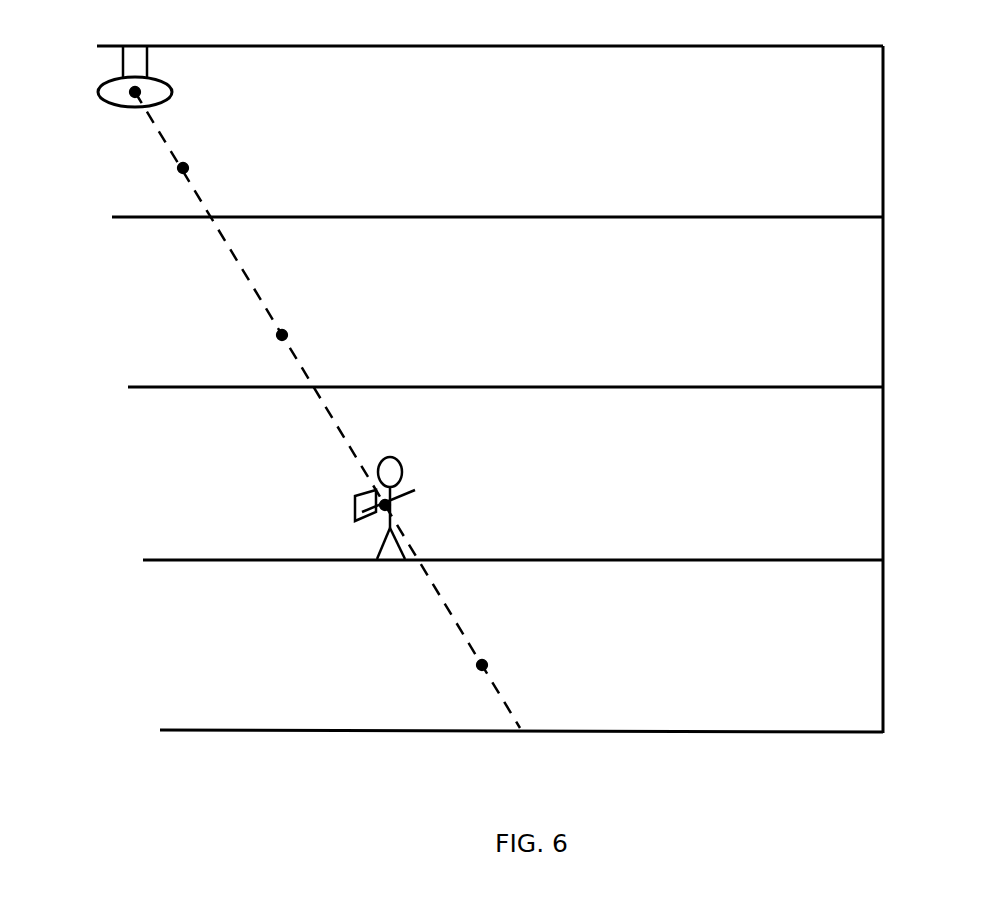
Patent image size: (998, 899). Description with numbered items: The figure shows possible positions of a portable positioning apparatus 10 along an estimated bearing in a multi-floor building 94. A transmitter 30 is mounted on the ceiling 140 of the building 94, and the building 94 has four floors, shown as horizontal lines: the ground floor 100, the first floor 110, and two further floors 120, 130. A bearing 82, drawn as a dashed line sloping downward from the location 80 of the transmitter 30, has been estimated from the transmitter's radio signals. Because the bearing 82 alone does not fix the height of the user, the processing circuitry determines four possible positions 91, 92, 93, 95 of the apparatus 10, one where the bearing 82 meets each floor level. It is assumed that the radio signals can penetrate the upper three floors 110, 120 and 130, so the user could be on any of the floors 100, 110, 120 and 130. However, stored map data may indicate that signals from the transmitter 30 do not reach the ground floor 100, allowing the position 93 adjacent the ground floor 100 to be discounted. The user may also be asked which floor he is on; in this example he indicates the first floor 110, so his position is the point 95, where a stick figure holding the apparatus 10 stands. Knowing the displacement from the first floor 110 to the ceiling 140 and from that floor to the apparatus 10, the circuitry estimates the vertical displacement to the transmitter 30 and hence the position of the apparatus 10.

The apparatus 10 is at (354, 507).
The transmitter 30 is at (176, 93).
The location of the transmitter 80 is at (132, 98).
The bearing 82 is at (268, 314).
The possible position 91 is at (189, 166).
The possible position 92 is at (277, 337).
The possible position 93 is at (477, 666).
The building 94 is at (918, 484).
The possible position 95 is at (392, 508).
The ground floor 100 is at (712, 733).
The first floor 110 is at (712, 561).
The floor 120 is at (712, 388).
The floor 130 is at (712, 218).
The ceiling 140 is at (712, 47).